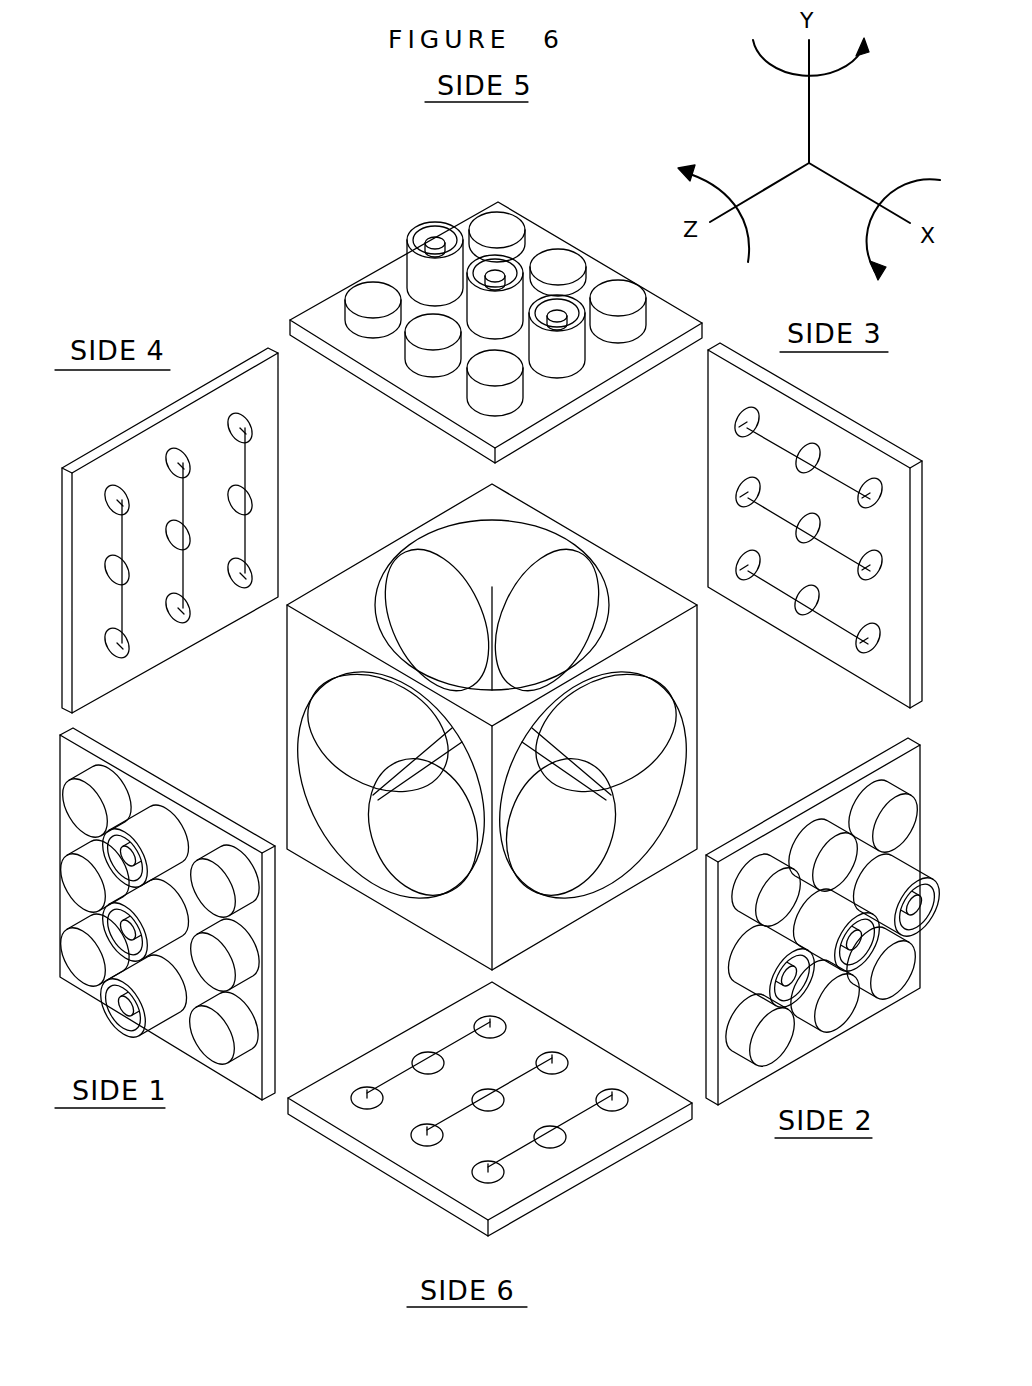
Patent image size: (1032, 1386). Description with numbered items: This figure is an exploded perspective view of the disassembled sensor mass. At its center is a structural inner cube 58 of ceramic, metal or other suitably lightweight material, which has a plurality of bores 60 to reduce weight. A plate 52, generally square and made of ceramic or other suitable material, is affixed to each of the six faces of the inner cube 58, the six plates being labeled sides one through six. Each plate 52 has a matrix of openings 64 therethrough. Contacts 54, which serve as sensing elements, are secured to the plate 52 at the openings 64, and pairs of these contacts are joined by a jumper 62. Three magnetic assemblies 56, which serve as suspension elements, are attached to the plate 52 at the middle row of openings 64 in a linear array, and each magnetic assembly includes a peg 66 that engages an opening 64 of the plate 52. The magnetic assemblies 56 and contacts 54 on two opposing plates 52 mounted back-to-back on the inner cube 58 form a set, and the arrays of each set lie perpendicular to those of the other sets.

The plate 52 is at (667, 327).
The contacts 54 is at (493, 230).
The magnetic assemblies 56 is at (423, 219).
The inner cube 58 is at (504, 506).
The bores 60 is at (508, 551).
The jumper 62 is at (248, 468).
The openings 64 is at (252, 426).
The peg 66 is at (242, 500).